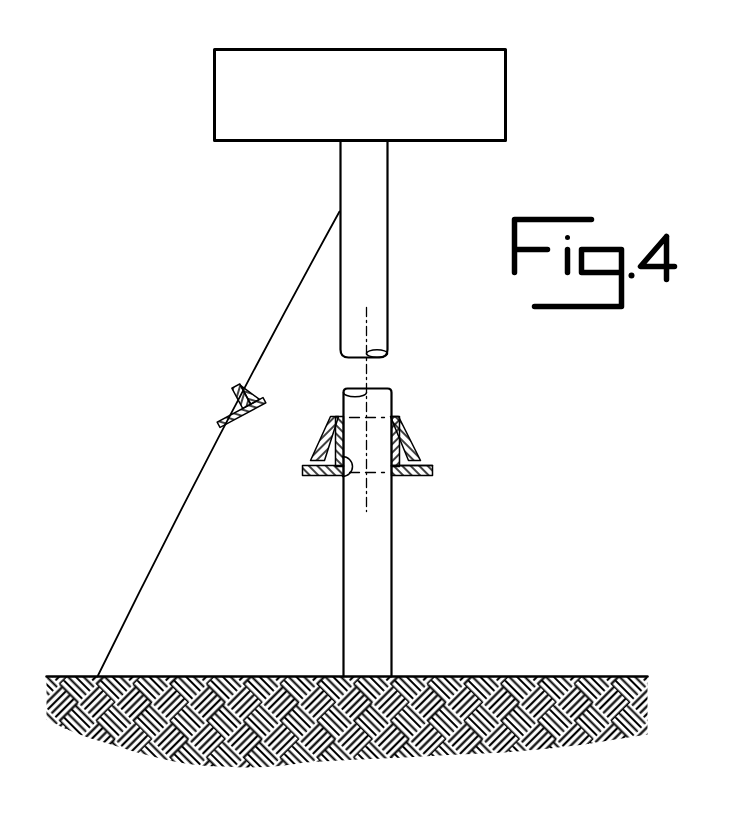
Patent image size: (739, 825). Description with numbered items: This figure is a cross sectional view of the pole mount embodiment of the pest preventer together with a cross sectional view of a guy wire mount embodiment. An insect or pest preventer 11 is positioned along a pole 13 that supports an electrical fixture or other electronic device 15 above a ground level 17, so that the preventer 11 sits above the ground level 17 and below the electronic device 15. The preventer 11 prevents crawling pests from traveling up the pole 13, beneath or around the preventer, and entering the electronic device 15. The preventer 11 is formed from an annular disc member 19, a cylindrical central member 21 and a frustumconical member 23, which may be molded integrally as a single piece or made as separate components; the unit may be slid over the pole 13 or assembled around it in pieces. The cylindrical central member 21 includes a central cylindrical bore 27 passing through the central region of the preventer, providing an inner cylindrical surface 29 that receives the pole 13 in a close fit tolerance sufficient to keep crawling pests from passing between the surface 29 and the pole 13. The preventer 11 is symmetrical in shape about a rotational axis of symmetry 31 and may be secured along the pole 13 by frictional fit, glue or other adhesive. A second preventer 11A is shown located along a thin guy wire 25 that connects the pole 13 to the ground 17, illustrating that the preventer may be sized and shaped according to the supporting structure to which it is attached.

The pest preventer 11 is at (415, 447).
The second preventer 11A is at (222, 378).
The pole 13 is at (367, 228).
The electronic device 15 is at (240, 90).
The ground level 17 is at (472, 671).
The annular disc member 19 is at (410, 472).
The cylindrical central member 21 is at (428, 461).
The frustumconical member 23 is at (403, 422).
The guy wire 25 is at (290, 290).
The central cylindrical bore 27 is at (332, 413).
The inner cylindrical surface 29 is at (342, 472).
The rotational axis of symmetry 31 is at (362, 326).